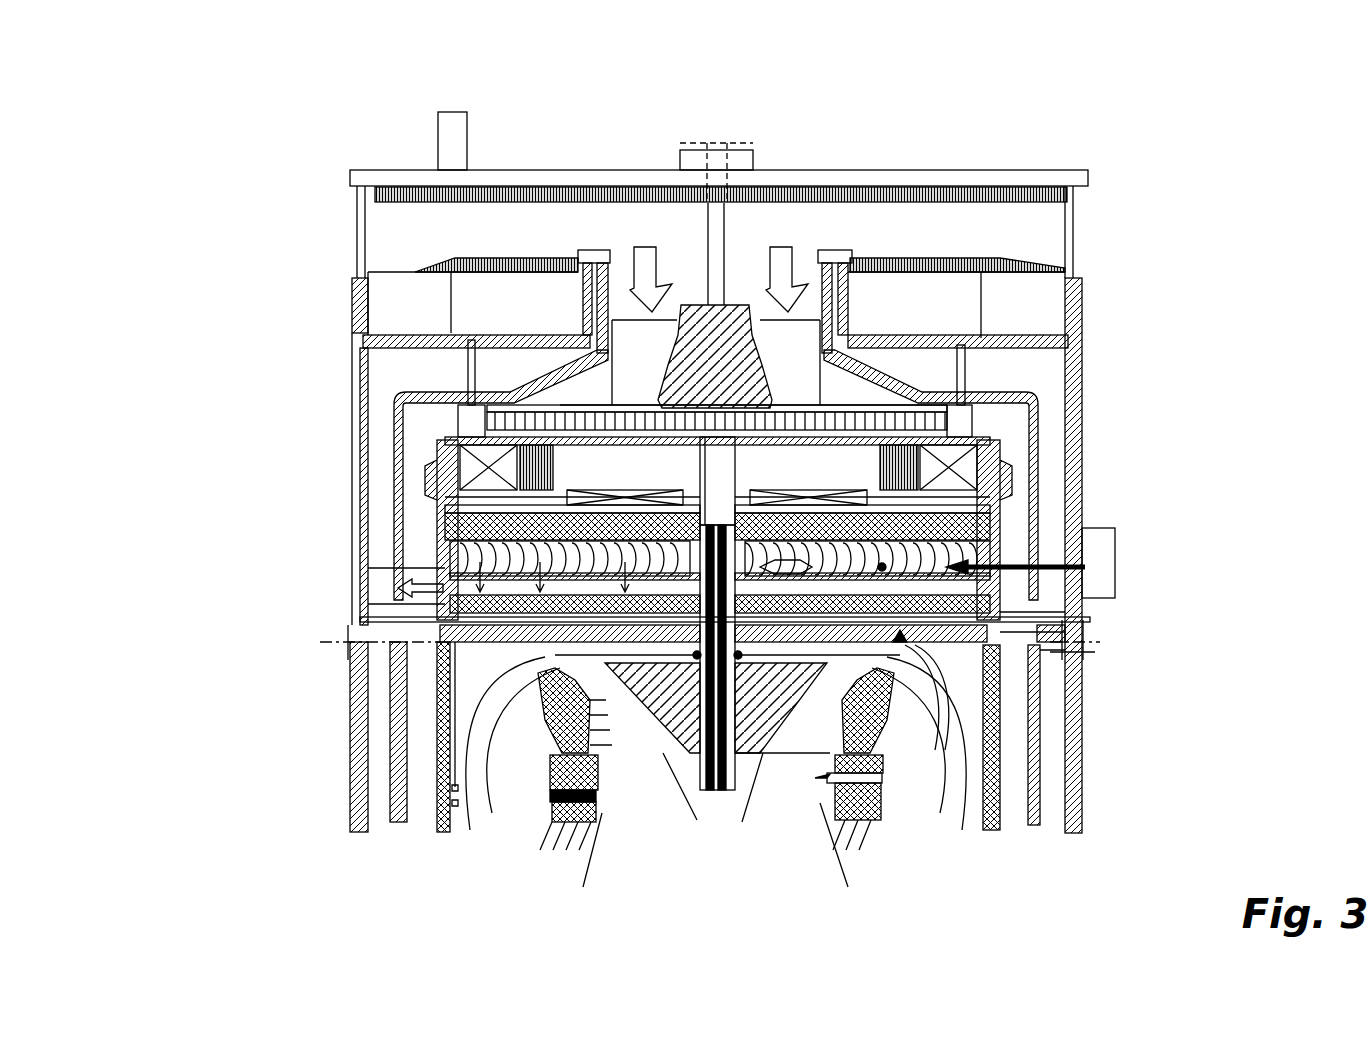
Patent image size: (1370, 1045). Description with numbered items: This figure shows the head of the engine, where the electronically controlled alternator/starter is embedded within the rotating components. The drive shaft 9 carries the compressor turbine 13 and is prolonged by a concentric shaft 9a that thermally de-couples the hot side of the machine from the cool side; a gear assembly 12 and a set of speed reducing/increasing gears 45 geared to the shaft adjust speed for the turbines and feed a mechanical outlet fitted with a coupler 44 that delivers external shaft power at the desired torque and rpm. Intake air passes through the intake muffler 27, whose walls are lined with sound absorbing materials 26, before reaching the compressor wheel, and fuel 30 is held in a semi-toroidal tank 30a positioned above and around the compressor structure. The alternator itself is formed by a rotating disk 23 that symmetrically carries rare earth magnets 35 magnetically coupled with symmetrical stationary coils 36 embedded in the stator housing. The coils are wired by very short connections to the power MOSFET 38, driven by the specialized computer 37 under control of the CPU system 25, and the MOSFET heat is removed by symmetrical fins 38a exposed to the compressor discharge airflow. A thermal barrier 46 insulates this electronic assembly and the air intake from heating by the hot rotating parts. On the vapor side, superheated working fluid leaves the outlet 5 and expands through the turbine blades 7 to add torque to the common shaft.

The outlet 5 is at (437, 820).
The blades 7 is at (445, 560).
The drive shaft 9 is at (890, 785).
The concentric shaft 9a is at (610, 445).
The gear assembly 12 is at (715, 500).
The compressor turbine 13 is at (795, 360).
The rotating disk 23 is at (850, 468).
The CPU system 25 is at (912, 510).
The sound absorbing materials 26 is at (513, 255).
The intake muffler 27 is at (893, 182).
The fuel 30 is at (940, 308).
The semi-toroidal tank 30a is at (983, 320).
The rare earth magnets 35 is at (455, 440).
The stationary coils 36 is at (458, 450).
The specialized computer 37 is at (600, 498).
The power MOSFET 38 is at (430, 468).
The fins 38a is at (425, 481).
The coupler 44 is at (732, 148).
The speed reducing/increasing gears 45 is at (1045, 650).
The thermal barrier 46 is at (465, 523).